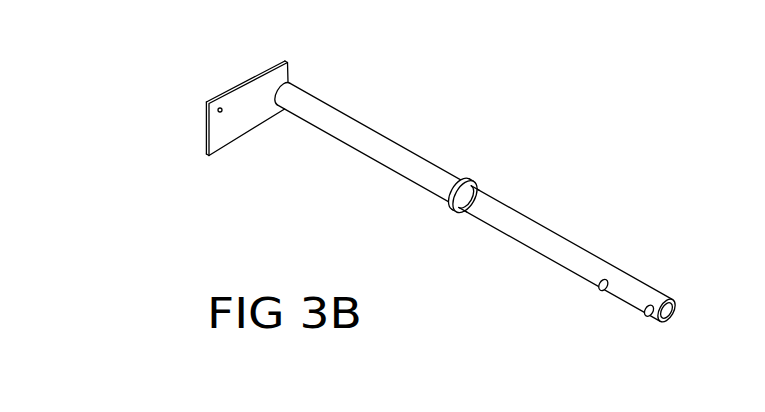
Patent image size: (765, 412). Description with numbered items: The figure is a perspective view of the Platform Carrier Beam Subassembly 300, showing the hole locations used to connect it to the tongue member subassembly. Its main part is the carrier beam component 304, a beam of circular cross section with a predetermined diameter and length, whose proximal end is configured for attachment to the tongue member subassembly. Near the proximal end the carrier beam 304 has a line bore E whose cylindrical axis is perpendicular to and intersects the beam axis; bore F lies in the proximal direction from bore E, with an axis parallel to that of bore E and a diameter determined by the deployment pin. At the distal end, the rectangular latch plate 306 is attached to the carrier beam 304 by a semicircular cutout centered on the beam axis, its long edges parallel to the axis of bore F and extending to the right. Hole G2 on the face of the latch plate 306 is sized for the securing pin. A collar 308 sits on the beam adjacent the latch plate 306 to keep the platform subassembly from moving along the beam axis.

The Platform Carrier Beam Subassembly 300 is at (362, 213).
The carrier beam component 304 is at (477, 204).
The Latch Plate 306 is at (197, 104).
The Collar 308 is at (523, 177).
The Hole G2 is at (137, 97).
The line bore E is at (545, 299).
The Bore F is at (595, 339).